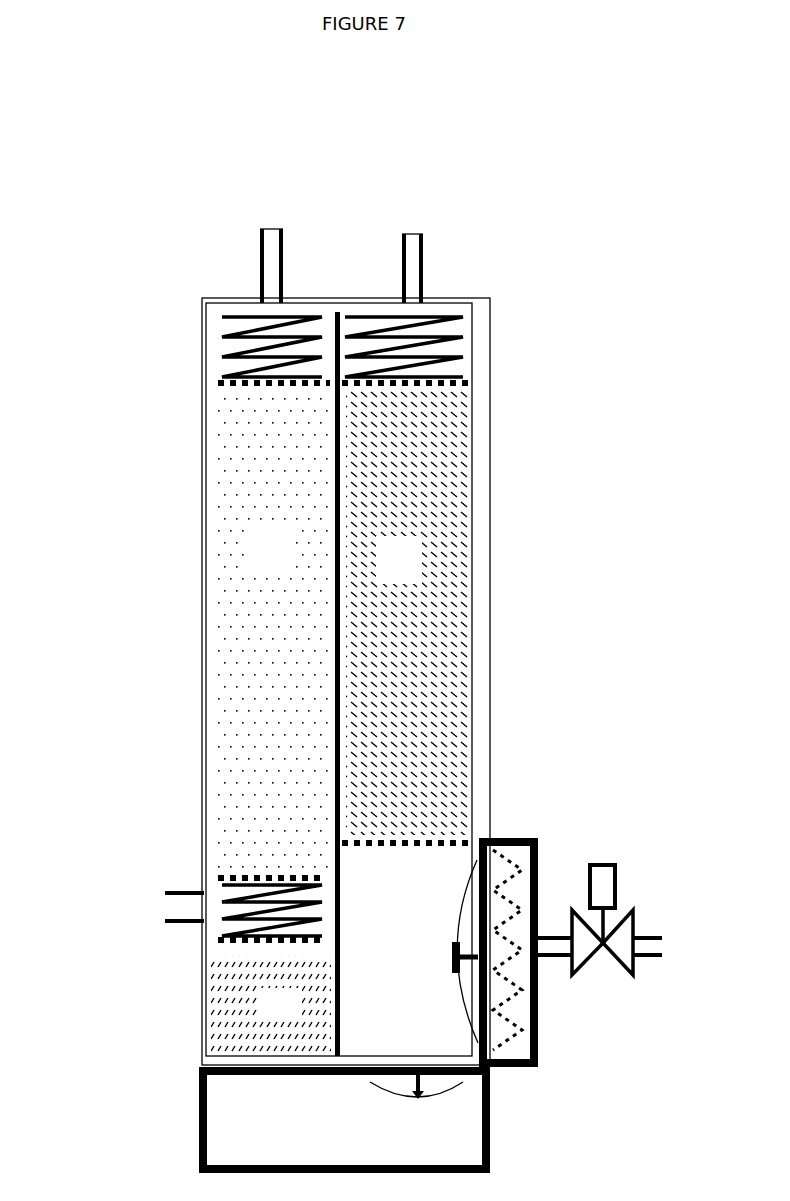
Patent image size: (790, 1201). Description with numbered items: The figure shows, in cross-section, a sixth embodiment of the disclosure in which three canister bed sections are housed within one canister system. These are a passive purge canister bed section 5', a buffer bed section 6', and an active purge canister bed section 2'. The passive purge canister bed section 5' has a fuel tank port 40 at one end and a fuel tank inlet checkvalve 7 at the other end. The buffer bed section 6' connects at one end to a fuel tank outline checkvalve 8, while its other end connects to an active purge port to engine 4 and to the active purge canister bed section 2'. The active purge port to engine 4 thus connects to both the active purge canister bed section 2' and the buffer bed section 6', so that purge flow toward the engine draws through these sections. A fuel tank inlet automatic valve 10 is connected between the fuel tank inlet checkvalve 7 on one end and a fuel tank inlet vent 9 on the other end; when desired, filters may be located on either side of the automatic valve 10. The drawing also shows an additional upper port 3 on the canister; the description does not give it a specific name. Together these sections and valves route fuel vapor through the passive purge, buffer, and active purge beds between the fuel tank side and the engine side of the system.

The inlet tube 3 is at (238, 232).
The fuel tank port 40 is at (435, 213).
The active purge port to engine 4 is at (150, 902).
The active purge canister bed section 2' is at (272, 632).
The passive purge canister bed section 5' is at (407, 612).
The buffer bed section 6' is at (271, 1004).
The fuel tank inlet checkvalve 7 is at (410, 943).
The fuel tank outline checkvalve 8 is at (344, 1120).
The fuel tank inlet vent 9 is at (663, 917).
The fuel tank inlet automatic valve 10 is at (610, 847).